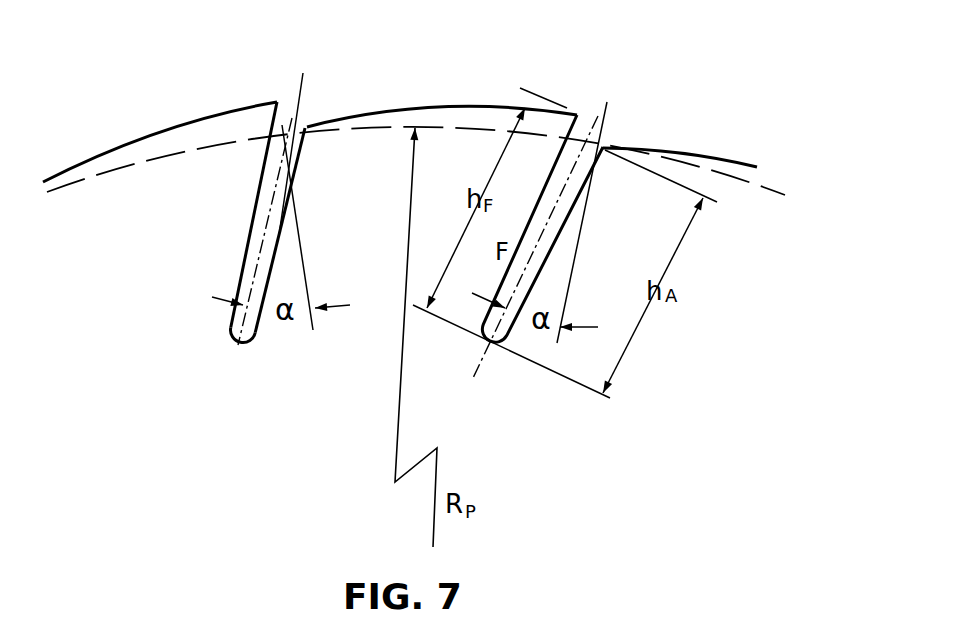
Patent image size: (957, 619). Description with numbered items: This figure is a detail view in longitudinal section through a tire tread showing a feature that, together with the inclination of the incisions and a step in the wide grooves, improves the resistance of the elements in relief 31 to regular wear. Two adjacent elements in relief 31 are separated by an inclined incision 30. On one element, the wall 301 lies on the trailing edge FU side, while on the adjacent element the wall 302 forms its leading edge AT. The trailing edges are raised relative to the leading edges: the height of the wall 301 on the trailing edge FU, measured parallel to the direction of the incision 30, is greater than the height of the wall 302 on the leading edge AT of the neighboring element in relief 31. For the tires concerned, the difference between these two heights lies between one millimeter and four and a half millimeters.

The incision 30 is at (395, 240).
The wall 301 is at (252, 227).
The wall 302 is at (277, 245).
The element in relief 31 is at (372, 185).
The trailing edge FU is at (263, 102).
The leading edge AT is at (603, 148).